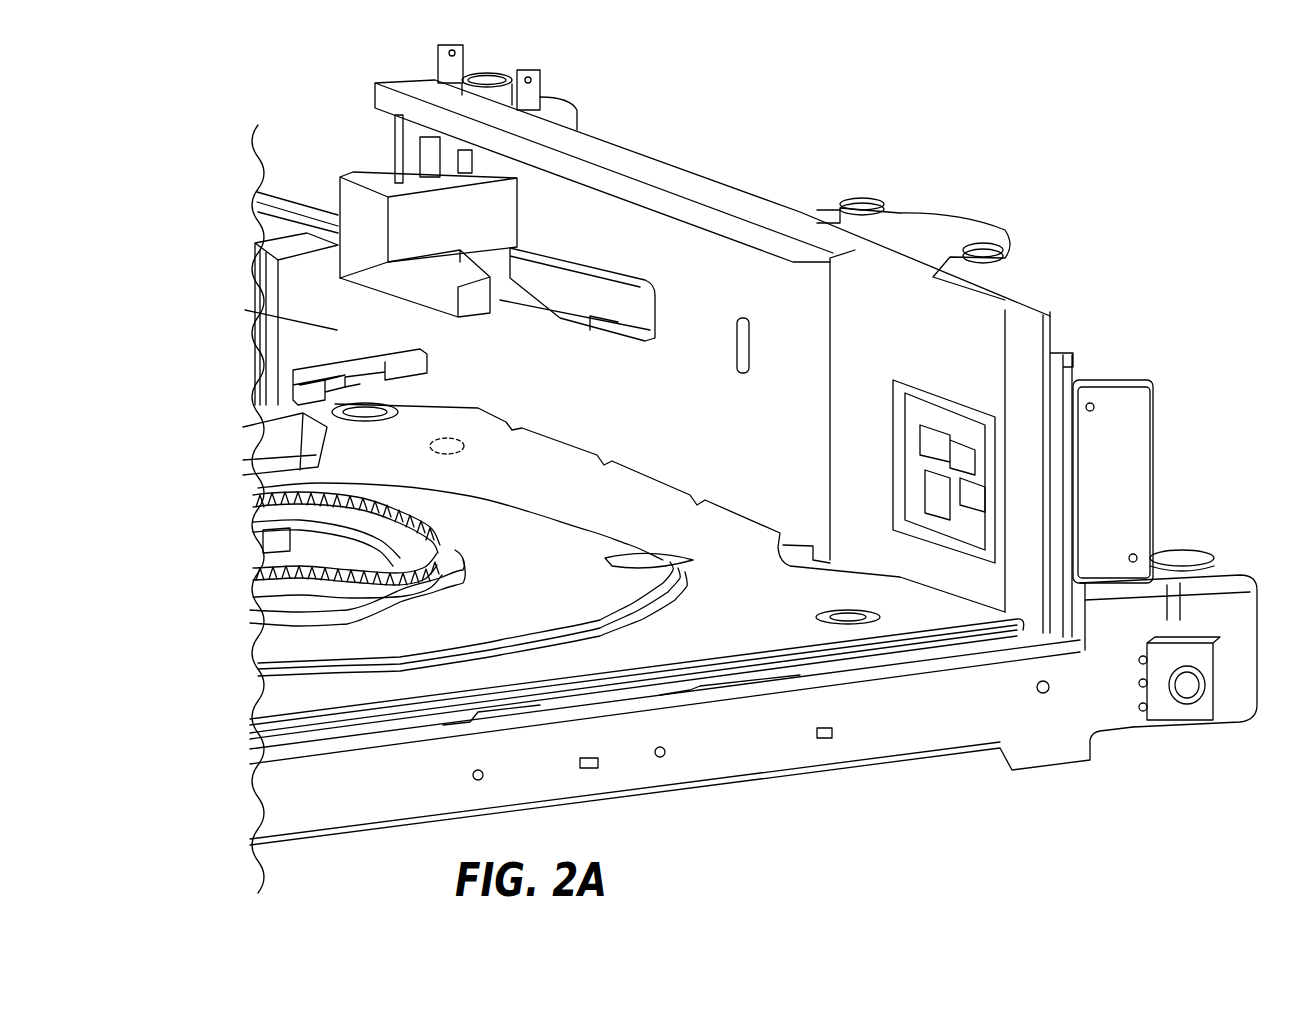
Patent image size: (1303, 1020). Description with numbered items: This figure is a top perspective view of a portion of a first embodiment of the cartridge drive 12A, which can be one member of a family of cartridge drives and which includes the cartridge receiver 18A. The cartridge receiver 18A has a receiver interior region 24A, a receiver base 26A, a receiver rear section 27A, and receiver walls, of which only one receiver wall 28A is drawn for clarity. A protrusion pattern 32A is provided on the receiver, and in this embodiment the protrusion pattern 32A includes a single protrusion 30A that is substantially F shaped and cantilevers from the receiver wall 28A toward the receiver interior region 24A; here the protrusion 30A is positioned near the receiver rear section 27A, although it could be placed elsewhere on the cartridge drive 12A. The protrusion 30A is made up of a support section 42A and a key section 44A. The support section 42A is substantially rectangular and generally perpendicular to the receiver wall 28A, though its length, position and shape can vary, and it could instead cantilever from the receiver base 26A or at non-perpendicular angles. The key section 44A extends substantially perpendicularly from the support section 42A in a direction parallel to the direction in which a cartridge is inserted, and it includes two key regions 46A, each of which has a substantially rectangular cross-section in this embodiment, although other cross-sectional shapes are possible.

The cartridge drive 12A is at (1015, 83).
The cartridge receiver 18A is at (782, 622).
The receiver interior region 24A is at (605, 392).
The receiver base 26A is at (457, 433).
The receiver rear section 27A is at (283, 430).
The receiver wall 28A is at (800, 330).
The protrusion 30A is at (340, 325).
The protrusion pattern 32A is at (313, 358).
The support section 42A is at (430, 365).
The key section 44A is at (307, 393).
The key regions 46A is at (333, 400).